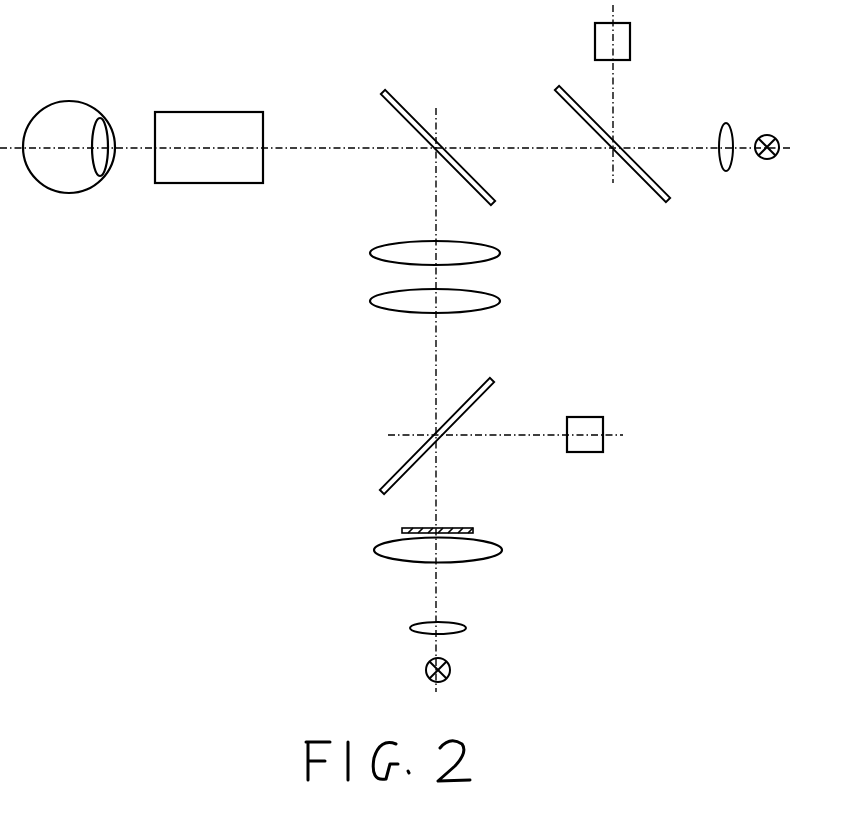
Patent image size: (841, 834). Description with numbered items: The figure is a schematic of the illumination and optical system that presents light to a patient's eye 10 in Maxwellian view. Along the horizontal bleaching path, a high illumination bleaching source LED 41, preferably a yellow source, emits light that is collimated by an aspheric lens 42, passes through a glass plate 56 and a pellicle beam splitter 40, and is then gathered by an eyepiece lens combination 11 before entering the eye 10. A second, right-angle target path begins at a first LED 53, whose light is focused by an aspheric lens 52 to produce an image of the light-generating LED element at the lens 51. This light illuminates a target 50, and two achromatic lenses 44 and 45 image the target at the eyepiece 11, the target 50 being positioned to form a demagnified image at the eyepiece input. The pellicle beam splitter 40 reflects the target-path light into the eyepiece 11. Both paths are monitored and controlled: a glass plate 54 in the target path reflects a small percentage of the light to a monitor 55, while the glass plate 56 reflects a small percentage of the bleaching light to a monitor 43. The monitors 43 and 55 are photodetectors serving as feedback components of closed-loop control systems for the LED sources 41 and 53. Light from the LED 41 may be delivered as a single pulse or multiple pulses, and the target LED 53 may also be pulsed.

The eye 10 is at (72, 108).
The eyepiece lens combination 11 is at (212, 112).
The pellicle beam splitter 40 is at (407, 111).
The high illumination bleaching source LED 41 is at (767, 135).
The aspheric lens 42 is at (725, 123).
The monitor 43 is at (630, 41).
The achromatic lens 44 is at (372, 253).
The achromatic lens 45 is at (372, 301).
The target 50 is at (402, 531).
The lens 51 is at (378, 553).
The aspheric lens 52 is at (411, 628).
The first LED 53 is at (426, 670).
The glass plate 54 is at (396, 470).
The monitor 55 is at (585, 453).
The glass plate 56 is at (637, 172).